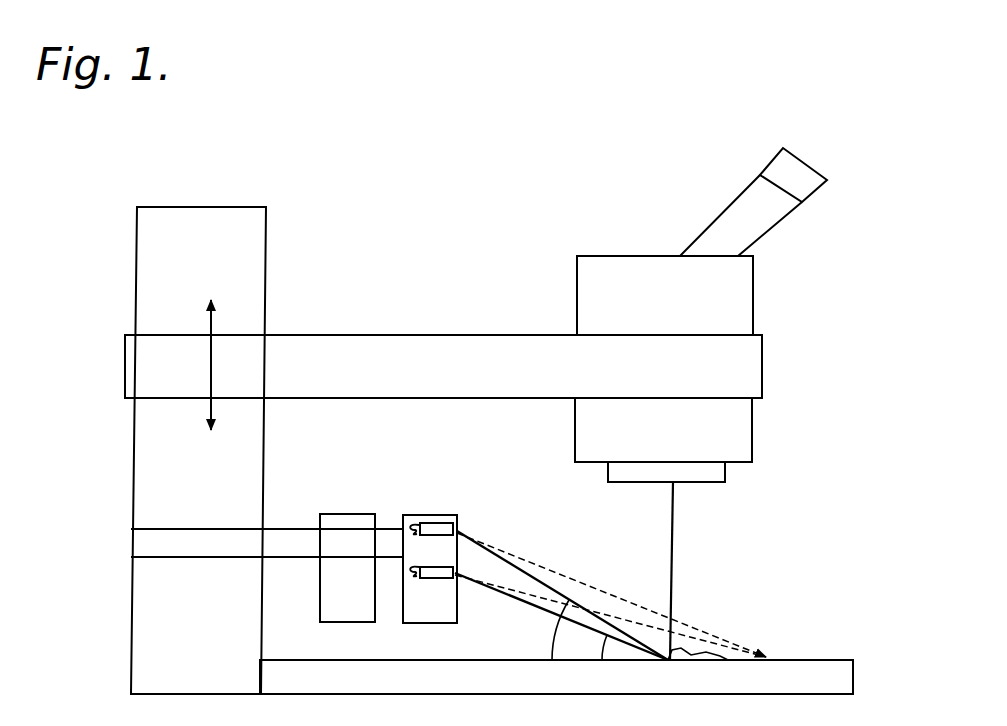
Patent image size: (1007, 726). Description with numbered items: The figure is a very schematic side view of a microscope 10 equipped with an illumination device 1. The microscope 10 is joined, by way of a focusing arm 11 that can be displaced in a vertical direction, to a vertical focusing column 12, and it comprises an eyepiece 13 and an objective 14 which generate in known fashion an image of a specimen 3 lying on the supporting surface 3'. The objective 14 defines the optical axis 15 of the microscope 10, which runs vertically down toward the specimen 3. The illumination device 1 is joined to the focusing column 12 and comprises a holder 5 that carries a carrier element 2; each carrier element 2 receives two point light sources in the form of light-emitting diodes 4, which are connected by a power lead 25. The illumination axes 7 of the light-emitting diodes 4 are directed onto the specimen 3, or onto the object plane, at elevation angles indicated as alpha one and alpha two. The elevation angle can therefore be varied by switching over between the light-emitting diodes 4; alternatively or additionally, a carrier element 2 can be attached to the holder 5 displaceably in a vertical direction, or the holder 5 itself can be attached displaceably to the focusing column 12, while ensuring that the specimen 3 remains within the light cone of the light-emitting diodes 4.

The illumination device 1 is at (457, 478).
The carrier element 2 is at (431, 501).
The specimen 3 is at (721, 616).
The workpiece surface 3' is at (571, 651).
The light-emitting diode 4 is at (458, 571).
The holder 5 is at (345, 553).
The illumination axis 7 is at (570, 603).
The microscope 10 is at (679, 416).
The focusing arm 11 is at (343, 349).
The focusing column 12 is at (152, 258).
The eyepiece 13 is at (737, 203).
The objective 14 is at (712, 472).
The optical axis 15 is at (676, 533).
The power lead 25 is at (419, 573).